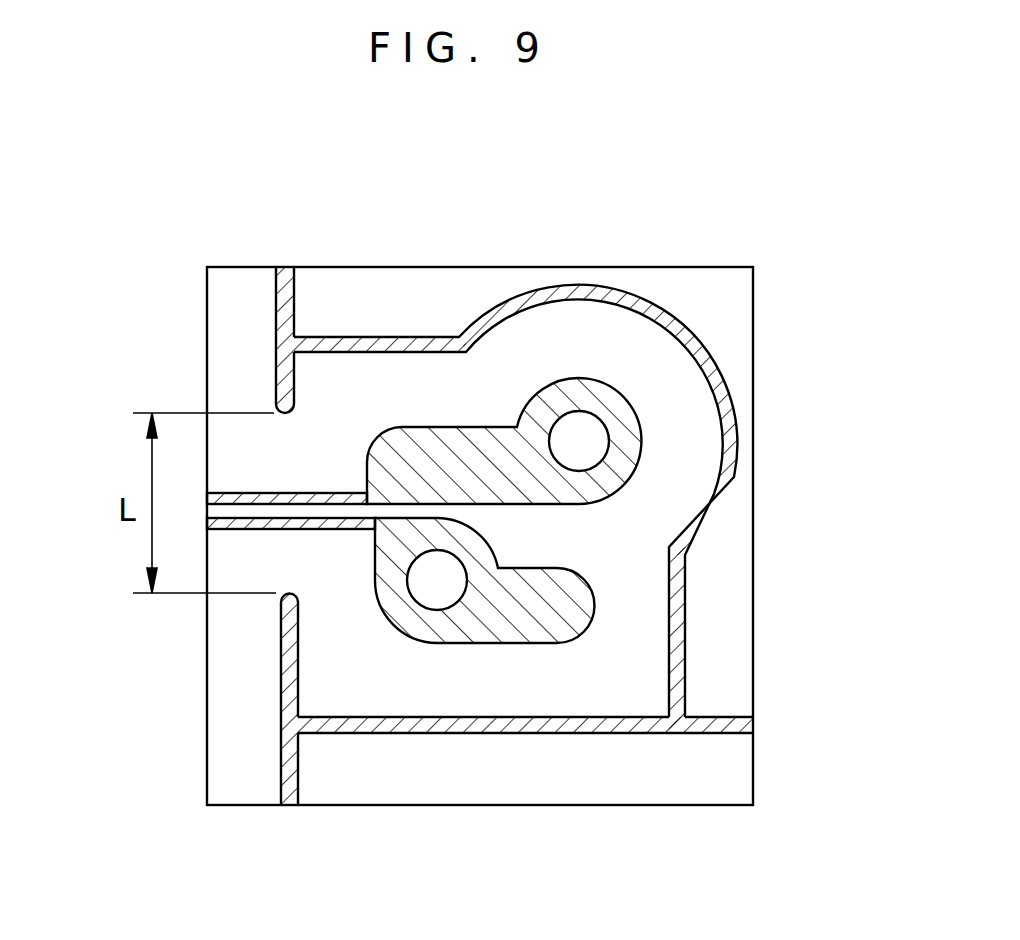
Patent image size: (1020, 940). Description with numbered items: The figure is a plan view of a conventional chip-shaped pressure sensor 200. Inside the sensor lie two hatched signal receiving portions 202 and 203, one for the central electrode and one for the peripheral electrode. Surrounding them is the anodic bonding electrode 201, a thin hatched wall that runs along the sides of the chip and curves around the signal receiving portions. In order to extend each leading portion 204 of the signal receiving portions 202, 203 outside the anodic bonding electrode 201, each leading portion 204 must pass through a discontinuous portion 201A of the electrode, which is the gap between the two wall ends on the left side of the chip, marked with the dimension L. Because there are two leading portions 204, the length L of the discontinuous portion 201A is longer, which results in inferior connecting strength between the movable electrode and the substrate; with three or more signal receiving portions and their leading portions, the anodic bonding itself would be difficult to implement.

The chip-shaped pressure sensor 200 is at (698, 267).
The anodic bonding electrode 201 is at (711, 360).
The discontinuous portion 201A is at (152, 460).
The signal receiving portion 202 is at (448, 632).
The signal receiving portion 203 is at (432, 432).
The leading portion 204 is at (262, 530).